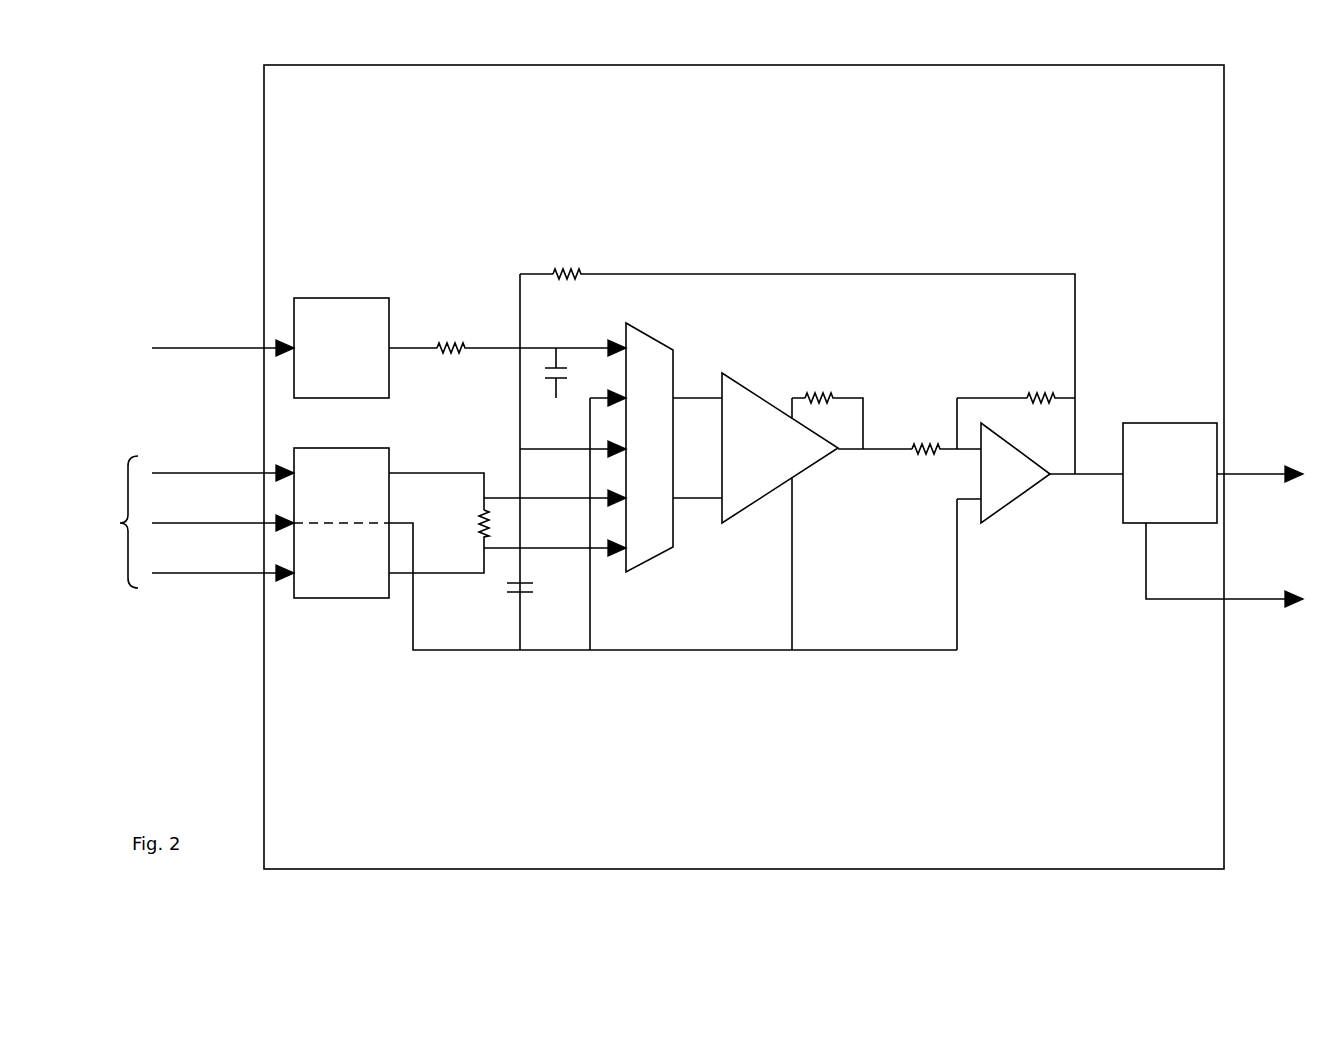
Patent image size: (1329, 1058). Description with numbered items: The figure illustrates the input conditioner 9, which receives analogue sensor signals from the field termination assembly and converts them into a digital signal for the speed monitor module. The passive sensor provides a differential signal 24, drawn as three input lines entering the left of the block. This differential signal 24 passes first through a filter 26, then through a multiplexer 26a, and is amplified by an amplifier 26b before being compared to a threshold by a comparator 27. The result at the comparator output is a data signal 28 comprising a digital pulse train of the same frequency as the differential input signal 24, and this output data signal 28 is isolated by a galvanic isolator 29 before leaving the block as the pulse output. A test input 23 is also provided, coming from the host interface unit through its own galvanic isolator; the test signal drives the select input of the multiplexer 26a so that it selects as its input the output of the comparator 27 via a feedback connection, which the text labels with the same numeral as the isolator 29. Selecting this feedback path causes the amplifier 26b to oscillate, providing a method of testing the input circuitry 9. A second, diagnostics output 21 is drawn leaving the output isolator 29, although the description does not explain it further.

The input conditioner 9 is at (711, 65).
The test input 23 is at (263, 348).
The differential signal 24 is at (183, 508).
The filter 26 is at (325, 598).
The multiplexer 26a is at (650, 332).
The amplifier 26b is at (750, 388).
The comparator 27 is at (1005, 507).
The data signal 28 is at (1260, 522).
The galvanic isolator 29 is at (1187, 423).
The diagnostics output 21 is at (1237, 592).